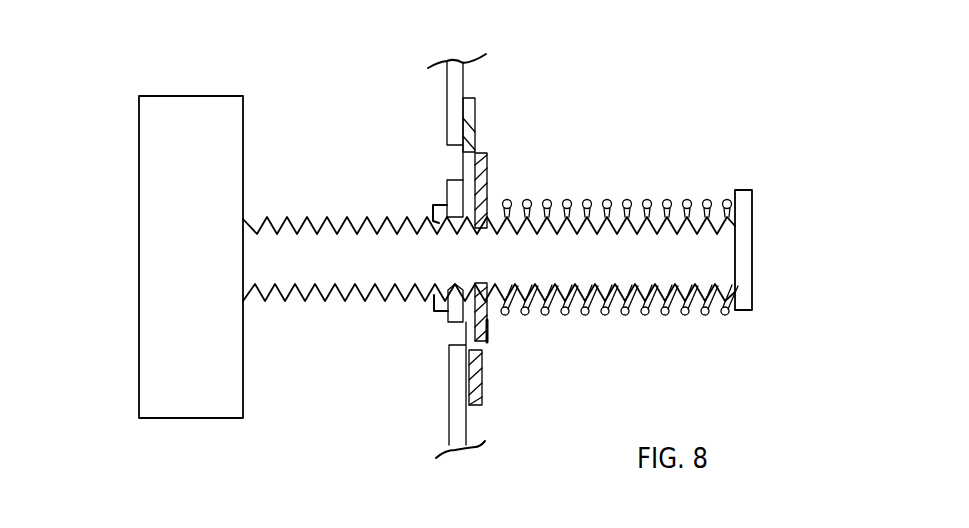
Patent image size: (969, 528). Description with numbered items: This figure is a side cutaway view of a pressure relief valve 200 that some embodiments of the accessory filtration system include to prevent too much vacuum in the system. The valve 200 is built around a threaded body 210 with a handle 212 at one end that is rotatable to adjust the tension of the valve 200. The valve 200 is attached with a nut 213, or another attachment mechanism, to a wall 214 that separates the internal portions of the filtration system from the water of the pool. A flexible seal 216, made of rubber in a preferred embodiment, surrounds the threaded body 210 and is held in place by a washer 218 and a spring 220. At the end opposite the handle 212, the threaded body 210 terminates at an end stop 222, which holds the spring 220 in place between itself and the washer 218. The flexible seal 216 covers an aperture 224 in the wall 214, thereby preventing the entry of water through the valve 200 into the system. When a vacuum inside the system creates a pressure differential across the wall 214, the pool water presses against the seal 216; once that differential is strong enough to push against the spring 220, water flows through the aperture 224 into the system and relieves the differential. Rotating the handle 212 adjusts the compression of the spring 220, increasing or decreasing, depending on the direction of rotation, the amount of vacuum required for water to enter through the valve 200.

The pressure relief valve 200 is at (170, 43).
The threaded body 210 is at (326, 297).
The handle 212 is at (139, 232).
The nut 213 is at (427, 208).
The wall 214 is at (450, 425).
The flexible seal 216 is at (483, 387).
The washer 218 is at (487, 192).
The spring 220 is at (572, 312).
The end stop 222 is at (753, 251).
The aperture 224 is at (449, 337).